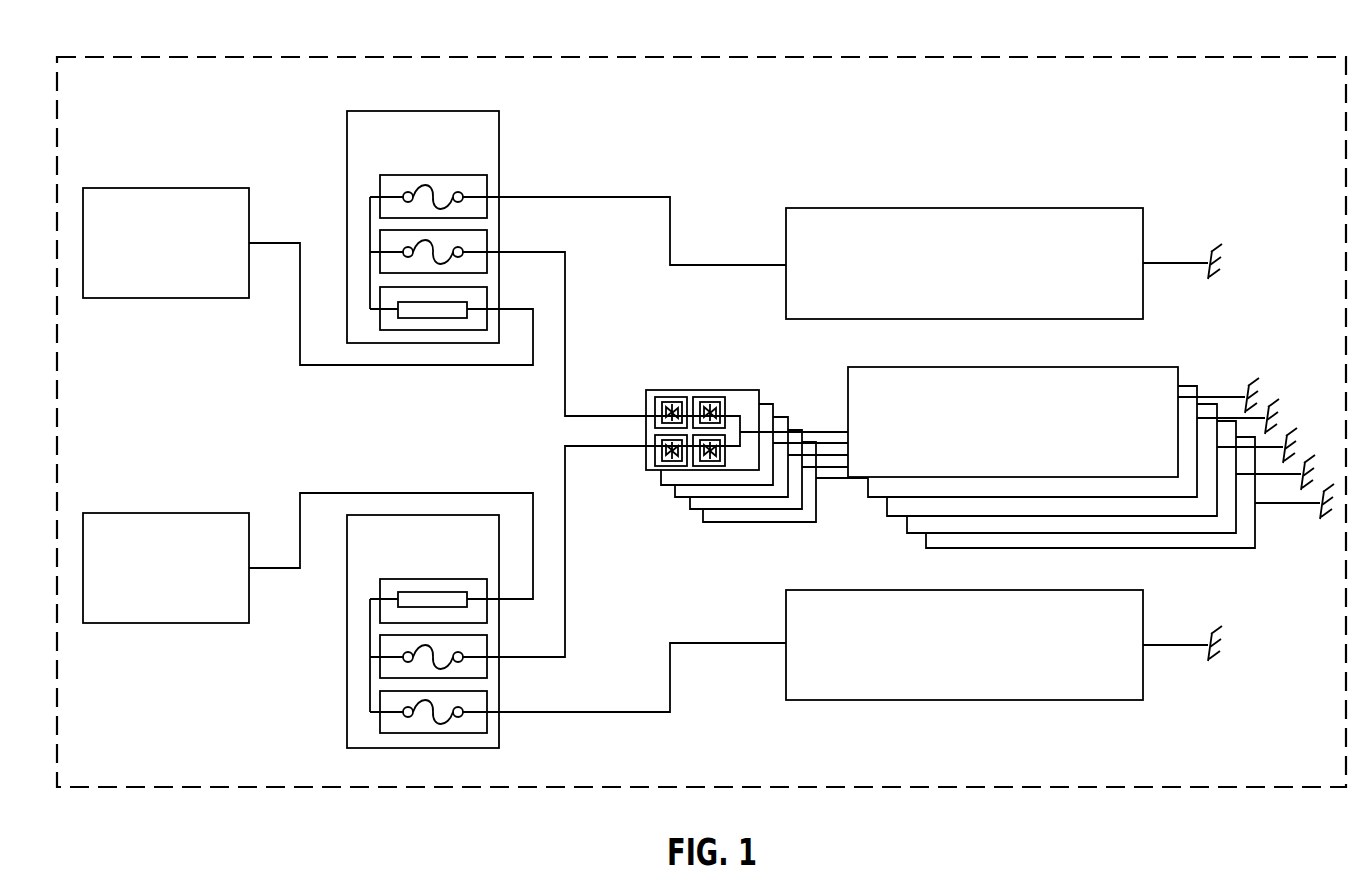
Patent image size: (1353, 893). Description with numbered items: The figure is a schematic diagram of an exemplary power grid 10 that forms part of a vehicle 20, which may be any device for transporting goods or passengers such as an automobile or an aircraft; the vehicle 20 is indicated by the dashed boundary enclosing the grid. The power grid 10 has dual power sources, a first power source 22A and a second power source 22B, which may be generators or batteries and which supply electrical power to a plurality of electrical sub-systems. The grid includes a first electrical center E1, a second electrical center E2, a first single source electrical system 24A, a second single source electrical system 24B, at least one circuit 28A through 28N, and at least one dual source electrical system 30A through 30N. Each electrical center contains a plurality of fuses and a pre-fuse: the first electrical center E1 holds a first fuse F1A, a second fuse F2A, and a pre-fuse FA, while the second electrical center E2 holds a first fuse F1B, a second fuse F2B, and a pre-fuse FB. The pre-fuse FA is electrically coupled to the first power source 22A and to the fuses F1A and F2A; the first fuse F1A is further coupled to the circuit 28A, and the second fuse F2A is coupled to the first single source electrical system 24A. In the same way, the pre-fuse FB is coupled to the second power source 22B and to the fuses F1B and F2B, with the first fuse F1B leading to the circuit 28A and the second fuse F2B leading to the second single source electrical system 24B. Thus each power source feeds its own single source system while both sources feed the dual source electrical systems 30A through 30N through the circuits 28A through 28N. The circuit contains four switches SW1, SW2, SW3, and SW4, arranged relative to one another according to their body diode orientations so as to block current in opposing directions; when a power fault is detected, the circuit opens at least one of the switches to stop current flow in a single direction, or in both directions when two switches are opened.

The power grid 10 is at (996, 123).
The vehicle 20 is at (1022, 787).
The first power source 22A is at (190, 258).
The second power source 22B is at (190, 583).
The first electrical center E1 is at (440, 152).
The second electrical center E2 is at (440, 561).
The second fuse F2A is at (487, 182).
The first fuse F1A is at (487, 237).
The pre-fuse FA is at (468, 305).
The pre-fuse FB is at (468, 605).
The first fuse F1B is at (487, 670).
The second fuse F2B is at (487, 727).
The first single source electrical system 24A is at (988, 279).
The second single source electrical system 24B is at (988, 661).
The circuit 28A is at (680, 442).
The circuit 28N is at (806, 437).
The switch SW1 is at (655, 404).
The switch SW2 is at (693, 402).
The switch SW3 is at (655, 462).
The switch SW4 is at (693, 501).
The dual source electrical system 30A is at (1030, 437).
The dual source electrical system 30N is at (1248, 436).